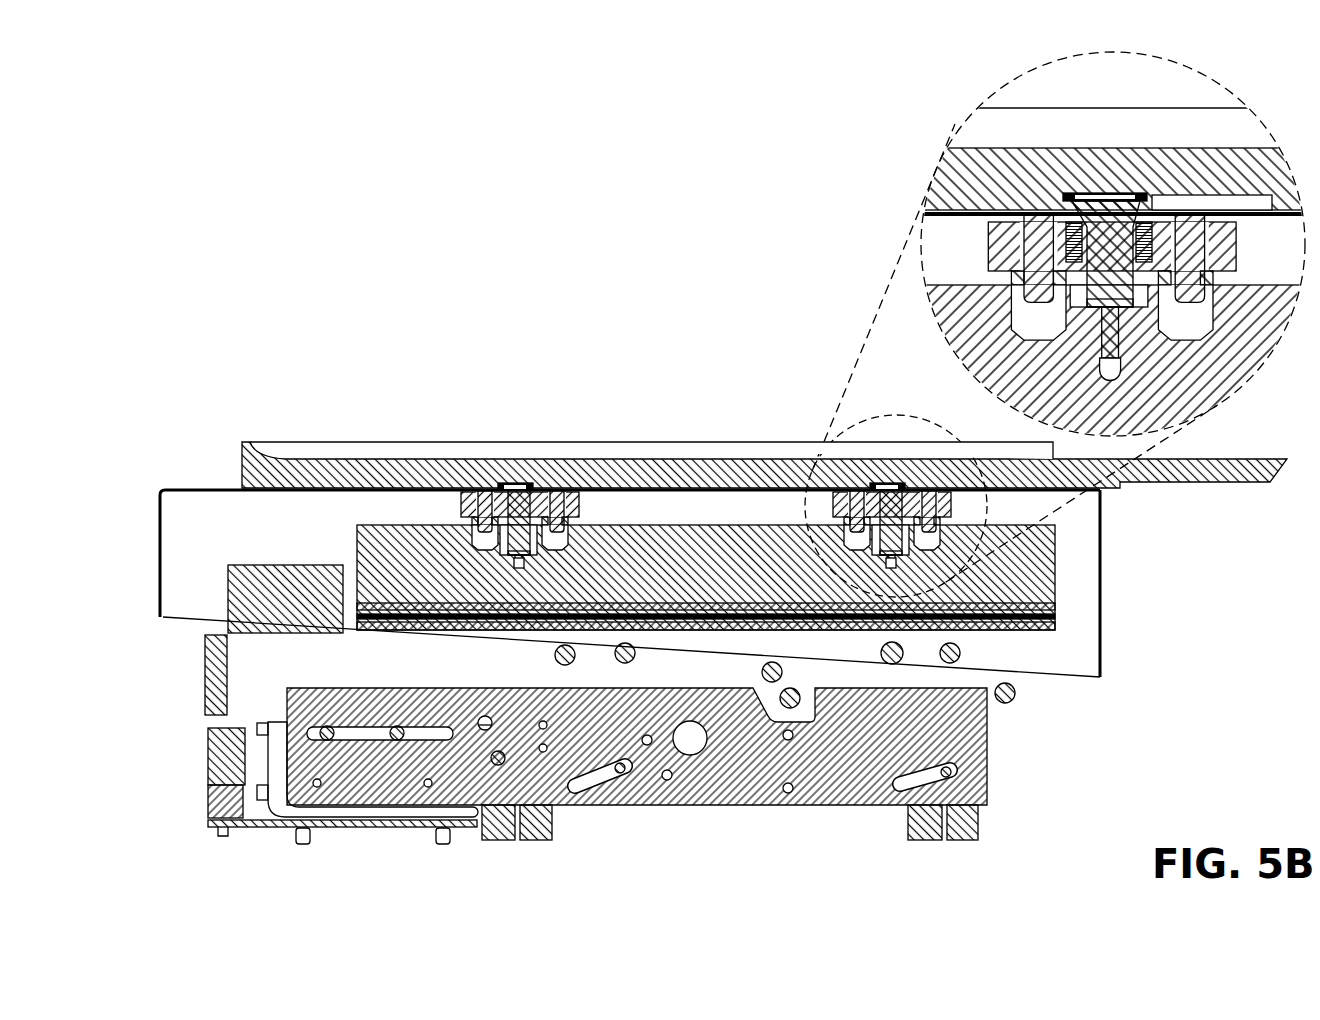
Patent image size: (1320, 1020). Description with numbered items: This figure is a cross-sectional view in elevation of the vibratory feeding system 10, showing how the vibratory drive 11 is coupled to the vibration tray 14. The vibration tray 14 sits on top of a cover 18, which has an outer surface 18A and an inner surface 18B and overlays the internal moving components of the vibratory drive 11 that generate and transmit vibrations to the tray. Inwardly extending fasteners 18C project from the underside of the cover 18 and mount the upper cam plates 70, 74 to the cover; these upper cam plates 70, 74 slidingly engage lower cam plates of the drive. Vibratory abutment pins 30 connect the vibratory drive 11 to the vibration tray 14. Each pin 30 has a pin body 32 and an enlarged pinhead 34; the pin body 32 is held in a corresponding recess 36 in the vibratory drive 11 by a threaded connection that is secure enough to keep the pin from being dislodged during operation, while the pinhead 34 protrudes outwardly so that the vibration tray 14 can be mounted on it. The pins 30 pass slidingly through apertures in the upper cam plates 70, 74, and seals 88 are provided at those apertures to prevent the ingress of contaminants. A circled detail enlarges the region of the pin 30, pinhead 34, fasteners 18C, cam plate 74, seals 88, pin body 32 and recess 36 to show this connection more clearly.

The vibratory feeding system 10 is at (262, 216).
The vibratory drive 11 is at (1038, 565).
The vibration tray 14 is at (255, 472).
The cover 18 is at (1106, 622).
The outer surface 18A is at (1103, 655).
The inner surface 18B is at (200, 525).
The inwardly extending fasteners 18C is at (487, 498).
The vibratory abutment pin 30 is at (510, 553).
The pin body 32 is at (535, 558).
The enlarged pinhead 34 is at (518, 490).
The recess 36 is at (518, 562).
The upper cam plate 70 is at (462, 500).
The upper cam plate 74 is at (990, 246).
The seal 88 is at (540, 495).